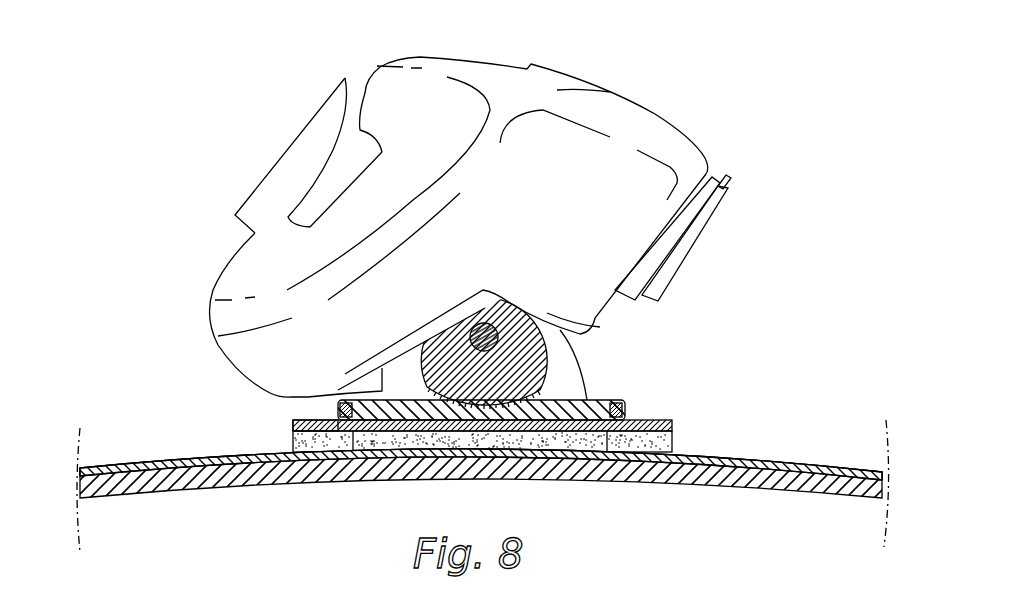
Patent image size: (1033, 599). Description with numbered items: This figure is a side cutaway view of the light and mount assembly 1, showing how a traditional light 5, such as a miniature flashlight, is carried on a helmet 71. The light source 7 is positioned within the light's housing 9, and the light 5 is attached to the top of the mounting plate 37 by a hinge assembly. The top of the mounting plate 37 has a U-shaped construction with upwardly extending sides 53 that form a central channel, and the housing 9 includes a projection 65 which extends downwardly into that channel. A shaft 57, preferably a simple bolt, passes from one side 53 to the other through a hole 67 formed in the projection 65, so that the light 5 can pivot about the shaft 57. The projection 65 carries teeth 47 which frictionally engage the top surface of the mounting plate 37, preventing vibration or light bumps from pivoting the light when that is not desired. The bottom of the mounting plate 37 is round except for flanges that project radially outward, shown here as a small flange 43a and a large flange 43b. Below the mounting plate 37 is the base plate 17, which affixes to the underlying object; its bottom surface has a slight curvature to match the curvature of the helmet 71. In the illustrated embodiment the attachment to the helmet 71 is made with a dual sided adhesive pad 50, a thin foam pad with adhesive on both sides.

The light and mount assembly 1 is at (505, 229).
The light 5 is at (614, 91).
The light source 7 is at (307, 147).
The housing 9 is at (440, 73).
The base plate 17 is at (672, 420).
The mounting plate 37 is at (382, 392).
The small flange 43a is at (625, 402).
The large flange 43b is at (293, 421).
The teeth 47 is at (545, 380).
The dual sided adhesive pad 50 is at (672, 437).
The upwardly extending sides 53 is at (575, 360).
The shaft 57 is at (484, 323).
The projection 65 is at (557, 335).
The hole 67 is at (453, 327).
The helmet 71 is at (838, 462).